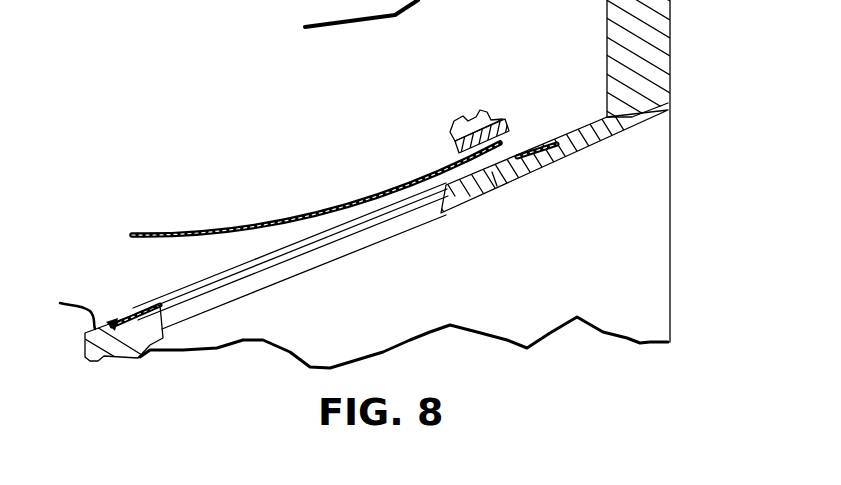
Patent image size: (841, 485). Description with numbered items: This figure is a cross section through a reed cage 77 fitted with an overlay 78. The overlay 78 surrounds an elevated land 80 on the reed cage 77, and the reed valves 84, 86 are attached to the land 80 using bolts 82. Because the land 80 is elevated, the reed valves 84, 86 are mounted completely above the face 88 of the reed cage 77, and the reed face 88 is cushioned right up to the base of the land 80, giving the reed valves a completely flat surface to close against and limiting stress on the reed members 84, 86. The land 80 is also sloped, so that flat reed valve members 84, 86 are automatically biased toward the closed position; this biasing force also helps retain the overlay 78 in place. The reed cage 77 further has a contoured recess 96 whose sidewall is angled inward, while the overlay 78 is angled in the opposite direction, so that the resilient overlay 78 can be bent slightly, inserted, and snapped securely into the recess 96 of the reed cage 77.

The reed cage 77 is at (658, 47).
The overlay 78 is at (548, 146).
The elevated land 80 is at (516, 154).
The bolts 82 is at (502, 116).
The reed valve 84 is at (132, 231).
The reed valve 86 is at (138, 308).
The face 88 is at (84, 321).
The contoured recess 96 is at (492, 172).